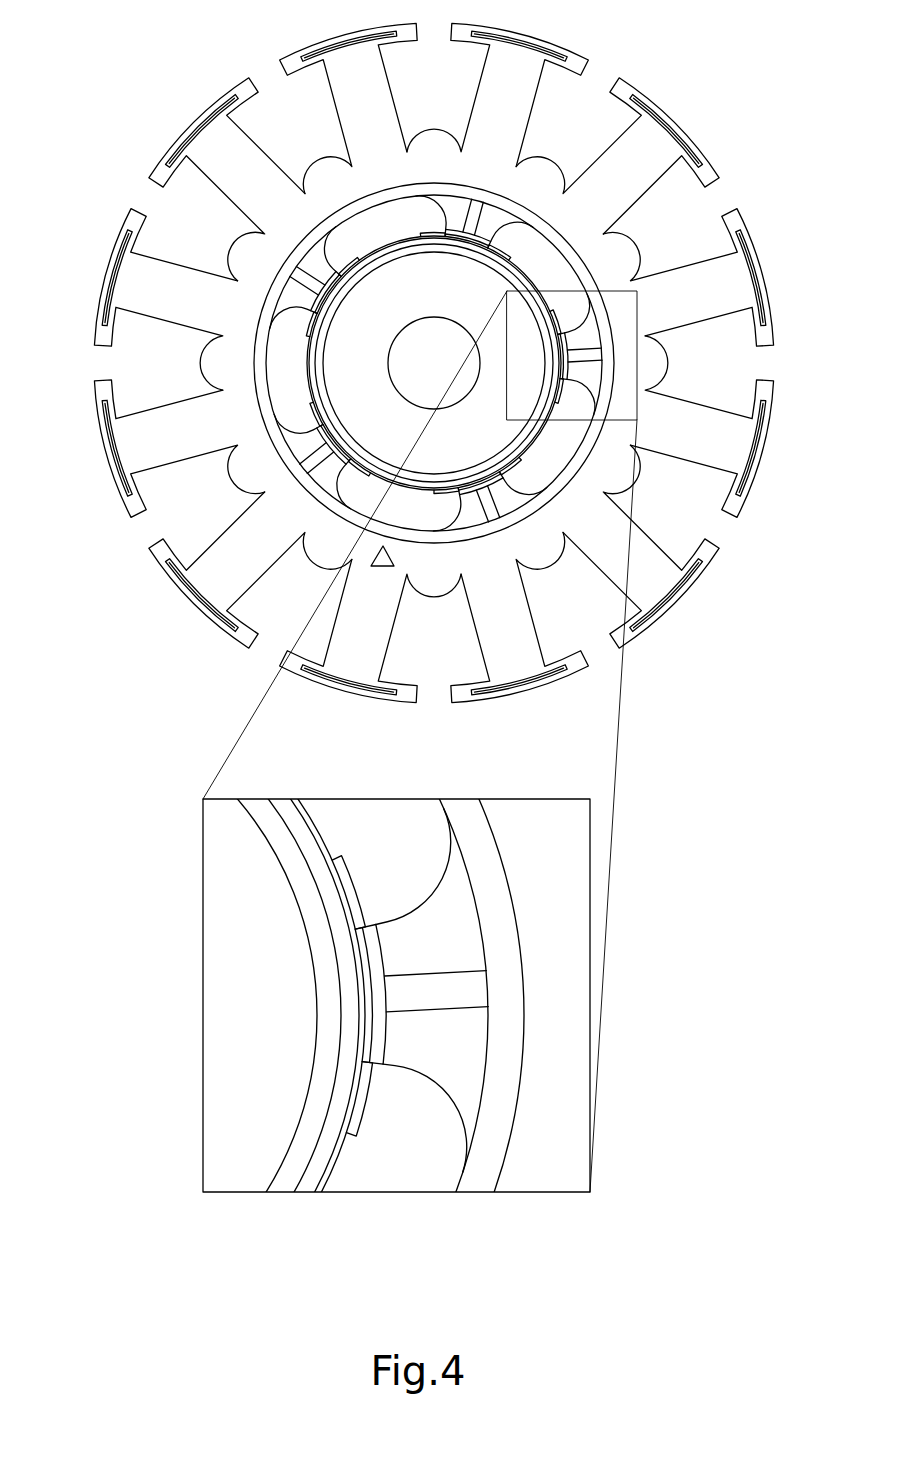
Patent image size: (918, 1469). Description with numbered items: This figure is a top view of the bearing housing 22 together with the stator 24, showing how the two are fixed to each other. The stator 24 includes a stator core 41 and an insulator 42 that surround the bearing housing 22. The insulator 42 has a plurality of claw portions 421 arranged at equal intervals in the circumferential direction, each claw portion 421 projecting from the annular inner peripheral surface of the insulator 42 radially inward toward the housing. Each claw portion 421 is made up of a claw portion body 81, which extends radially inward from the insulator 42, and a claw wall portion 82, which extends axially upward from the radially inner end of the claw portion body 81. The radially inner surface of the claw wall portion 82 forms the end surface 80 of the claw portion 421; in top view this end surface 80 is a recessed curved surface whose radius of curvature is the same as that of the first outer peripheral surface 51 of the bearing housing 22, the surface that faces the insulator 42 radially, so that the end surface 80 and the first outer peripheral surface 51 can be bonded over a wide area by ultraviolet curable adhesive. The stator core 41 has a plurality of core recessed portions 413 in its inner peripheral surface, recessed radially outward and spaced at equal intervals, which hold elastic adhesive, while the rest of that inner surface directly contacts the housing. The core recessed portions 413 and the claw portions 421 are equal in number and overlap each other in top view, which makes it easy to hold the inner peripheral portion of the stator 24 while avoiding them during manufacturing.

The bearing housing 22 is at (348, 303).
The stator 24 is at (712, 600).
The stator core 41 is at (382, 838).
The insulator 42 is at (497, 930).
The first outer peripheral surface 51 is at (480, 992).
The end surface 80 is at (315, 990).
The claw portion body 81 is at (426, 1043).
The claw wall portion 82 is at (373, 1025).
The core recessed portion 413 is at (558, 333).
The claw portion 421 is at (455, 705).